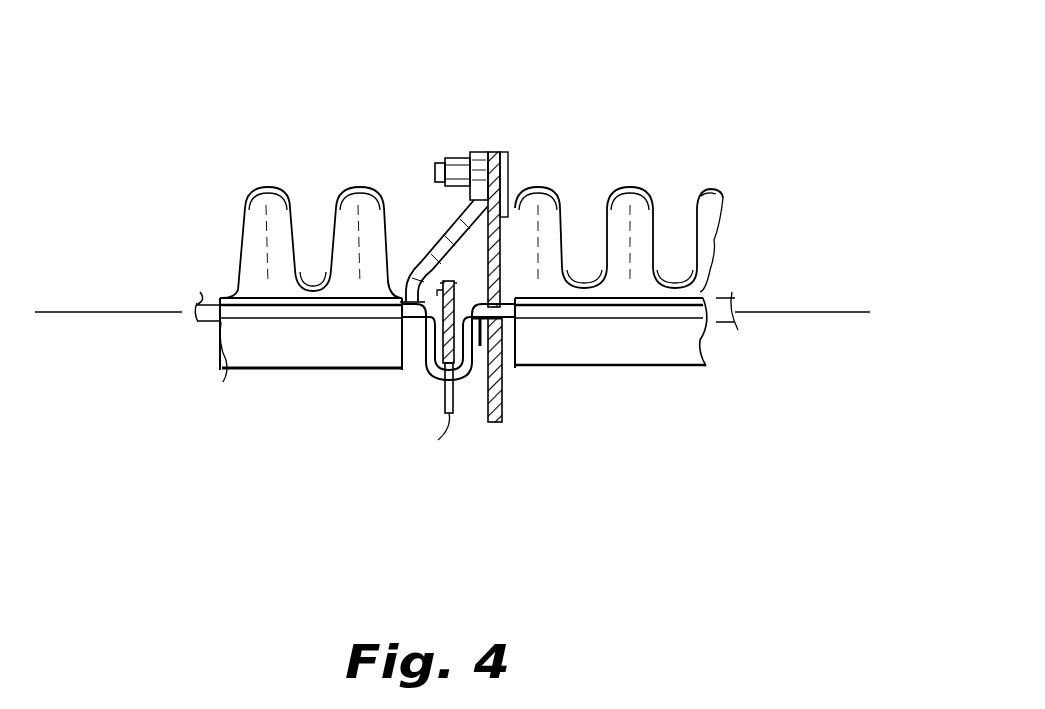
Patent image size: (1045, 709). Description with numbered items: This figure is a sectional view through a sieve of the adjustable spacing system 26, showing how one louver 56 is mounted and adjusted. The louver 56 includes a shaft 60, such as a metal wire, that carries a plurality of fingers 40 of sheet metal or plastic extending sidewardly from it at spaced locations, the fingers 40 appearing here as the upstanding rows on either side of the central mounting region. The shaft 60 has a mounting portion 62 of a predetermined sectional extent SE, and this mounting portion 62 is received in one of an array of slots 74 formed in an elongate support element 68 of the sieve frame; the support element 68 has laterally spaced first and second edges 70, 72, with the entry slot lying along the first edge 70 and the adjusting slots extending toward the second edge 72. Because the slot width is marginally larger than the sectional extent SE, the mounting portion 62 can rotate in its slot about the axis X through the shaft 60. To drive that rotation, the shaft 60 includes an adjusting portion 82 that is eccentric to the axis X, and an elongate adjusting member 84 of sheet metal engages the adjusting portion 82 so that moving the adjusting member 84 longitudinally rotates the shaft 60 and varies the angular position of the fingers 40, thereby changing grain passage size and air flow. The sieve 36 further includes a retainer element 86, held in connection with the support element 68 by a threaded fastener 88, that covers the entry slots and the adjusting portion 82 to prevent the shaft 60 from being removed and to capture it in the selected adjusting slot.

The adjustable spacing system 26 is at (445, 262).
The sieve 36 is at (718, 237).
The fingers 40 is at (340, 188).
The louver 56 is at (716, 193).
The shaft 60 is at (206, 324).
The mounting portion 62 is at (516, 335).
The support element 68 is at (495, 424).
The first edge 70 is at (487, 152).
The second edge 72 is at (494, 370).
The array of slots 74 is at (500, 242).
The adjusting portion 82 is at (427, 378).
The adjusting member 84 is at (448, 415).
The retainer element 86 is at (424, 262).
The threaded fastener 88 is at (491, 165).
The sectional extent SE is at (480, 300).
The axis X is at (76, 312).